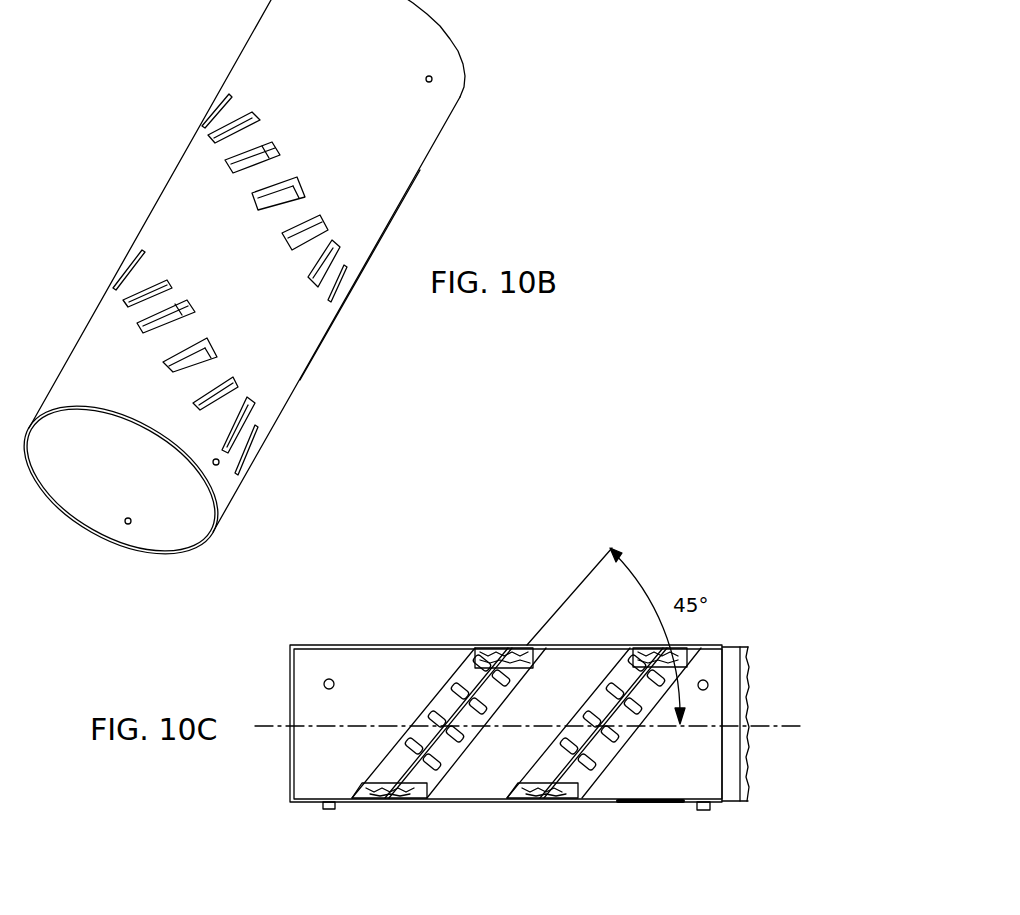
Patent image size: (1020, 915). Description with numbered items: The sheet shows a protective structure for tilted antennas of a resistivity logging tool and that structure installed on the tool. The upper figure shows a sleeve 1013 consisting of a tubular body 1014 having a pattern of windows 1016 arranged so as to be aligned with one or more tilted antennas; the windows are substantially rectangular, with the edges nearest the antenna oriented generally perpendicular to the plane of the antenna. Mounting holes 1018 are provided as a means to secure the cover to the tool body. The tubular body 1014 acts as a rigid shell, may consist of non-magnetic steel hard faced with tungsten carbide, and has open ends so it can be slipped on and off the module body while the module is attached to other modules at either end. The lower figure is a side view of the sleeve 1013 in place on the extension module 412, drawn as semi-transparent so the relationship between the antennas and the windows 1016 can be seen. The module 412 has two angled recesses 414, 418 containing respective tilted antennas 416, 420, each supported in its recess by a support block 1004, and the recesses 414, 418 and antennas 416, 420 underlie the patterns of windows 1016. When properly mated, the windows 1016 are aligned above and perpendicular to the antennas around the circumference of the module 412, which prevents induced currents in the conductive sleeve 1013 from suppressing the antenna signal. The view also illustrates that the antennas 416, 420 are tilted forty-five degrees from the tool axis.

In FIG. 10B, the sleeve 1013 is at (232, 292).
In FIG. 10C, the sleeve 1013 is at (323, 643).
In FIG. 10B, the tubular body 1014 is at (302, 370).
In FIG. 10B, the windows 1016 is at (208, 113).
In FIG. 10C, the windows 1016 is at (477, 673).
In FIG. 10B, the mounting holes 1018 is at (431, 82).
In FIG. 10C, the extension module 412 is at (733, 647).
In FIG. 10C, the angled recess 414 is at (480, 700).
In FIG. 10C, the tilted antenna 416 is at (481, 645).
In FIG. 10C, the angled recess 418 is at (570, 740).
In FIG. 10C, the tilted antenna 420 is at (630, 722).
In FIG. 10C, the support block 1004 is at (415, 795).